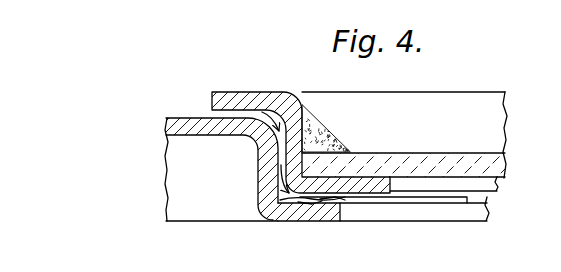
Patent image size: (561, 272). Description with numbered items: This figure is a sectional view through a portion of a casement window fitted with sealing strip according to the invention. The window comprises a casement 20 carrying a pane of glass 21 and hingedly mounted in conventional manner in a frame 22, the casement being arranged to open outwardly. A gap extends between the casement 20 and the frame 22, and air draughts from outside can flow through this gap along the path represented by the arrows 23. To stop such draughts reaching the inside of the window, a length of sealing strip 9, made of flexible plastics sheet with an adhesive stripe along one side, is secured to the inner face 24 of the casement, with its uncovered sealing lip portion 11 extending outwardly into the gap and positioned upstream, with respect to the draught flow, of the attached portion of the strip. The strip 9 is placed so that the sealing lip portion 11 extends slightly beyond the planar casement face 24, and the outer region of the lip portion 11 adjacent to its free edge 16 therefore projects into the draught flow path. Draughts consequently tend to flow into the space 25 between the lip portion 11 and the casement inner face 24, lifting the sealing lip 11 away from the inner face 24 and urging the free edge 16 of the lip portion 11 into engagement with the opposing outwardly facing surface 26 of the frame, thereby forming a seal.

The sealing strip 9 is at (364, 196).
The sealing lip portion 11 is at (327, 200).
The free edge 16 is at (273, 218).
The casement 20 is at (432, 108).
The pane of glass 21 is at (468, 153).
The frame 22 is at (459, 213).
The arrows 23 is at (203, 110).
The inner face 24 is at (377, 194).
The space 25 is at (275, 197).
The outwardly facing surface 26 is at (313, 202).